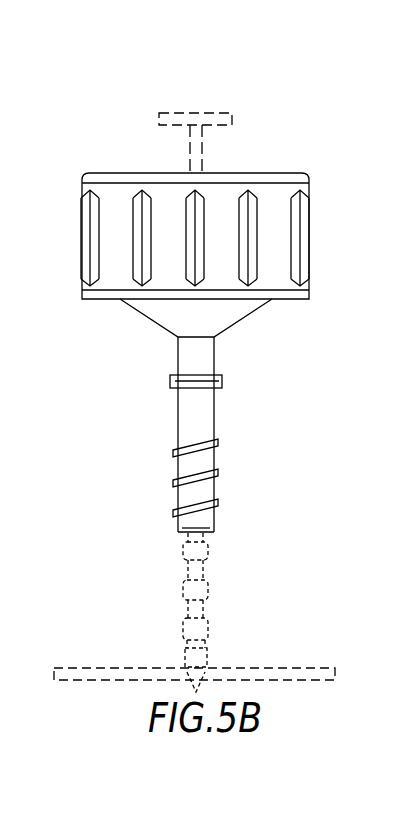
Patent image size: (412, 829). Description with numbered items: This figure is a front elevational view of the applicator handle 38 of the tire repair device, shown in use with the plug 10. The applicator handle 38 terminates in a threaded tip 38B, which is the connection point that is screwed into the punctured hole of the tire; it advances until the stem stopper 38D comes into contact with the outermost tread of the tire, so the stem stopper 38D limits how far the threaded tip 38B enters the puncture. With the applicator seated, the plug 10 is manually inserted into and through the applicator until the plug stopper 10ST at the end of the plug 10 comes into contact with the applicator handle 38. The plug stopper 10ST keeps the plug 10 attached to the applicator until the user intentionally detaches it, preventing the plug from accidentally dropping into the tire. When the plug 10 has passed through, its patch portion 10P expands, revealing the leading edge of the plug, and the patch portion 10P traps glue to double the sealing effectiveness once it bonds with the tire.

The plug 10 is at (195, 153).
The plug stopper 10ST is at (163, 120).
The patch portion 10P is at (252, 675).
The applicator handle 38 is at (167, 203).
The stem stopper 38D is at (171, 380).
The threaded tip 38B is at (218, 477).